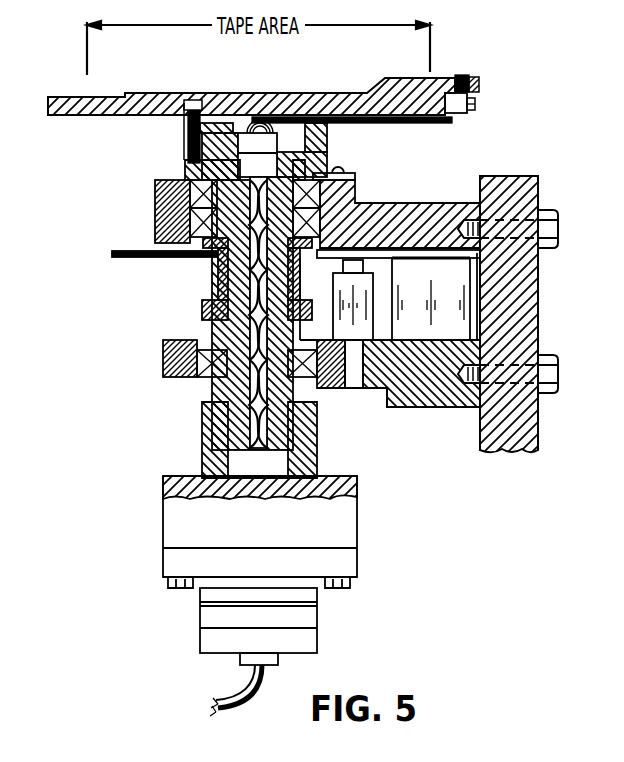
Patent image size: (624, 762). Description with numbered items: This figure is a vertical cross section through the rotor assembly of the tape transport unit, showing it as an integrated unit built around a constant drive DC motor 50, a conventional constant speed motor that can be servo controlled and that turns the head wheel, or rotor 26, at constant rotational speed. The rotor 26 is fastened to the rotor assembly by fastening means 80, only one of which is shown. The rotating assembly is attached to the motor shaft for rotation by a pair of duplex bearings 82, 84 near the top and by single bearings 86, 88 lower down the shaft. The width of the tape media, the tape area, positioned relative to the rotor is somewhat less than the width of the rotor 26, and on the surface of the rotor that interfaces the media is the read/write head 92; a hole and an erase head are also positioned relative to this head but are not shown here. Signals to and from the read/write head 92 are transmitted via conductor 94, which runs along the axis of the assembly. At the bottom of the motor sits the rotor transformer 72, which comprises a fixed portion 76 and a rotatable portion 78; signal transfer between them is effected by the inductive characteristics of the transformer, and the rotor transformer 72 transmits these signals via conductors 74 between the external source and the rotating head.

The rotor 26 is at (48, 116).
The fastening means 80 is at (200, 99).
The read/write head 92 is at (459, 75).
The duplex bearing 84 is at (345, 185).
The duplex bearing 82 is at (170, 218).
The conductor 94 is at (247, 266).
The single bearing 86 is at (207, 380).
The single bearing 88 is at (300, 380).
The constant drive DC motor 50 is at (558, 453).
The rotor transformer 72 is at (196, 592).
The fixed portion 76 is at (310, 594).
The rotatable portion 78 is at (320, 606).
The conductors 74 is at (214, 690).